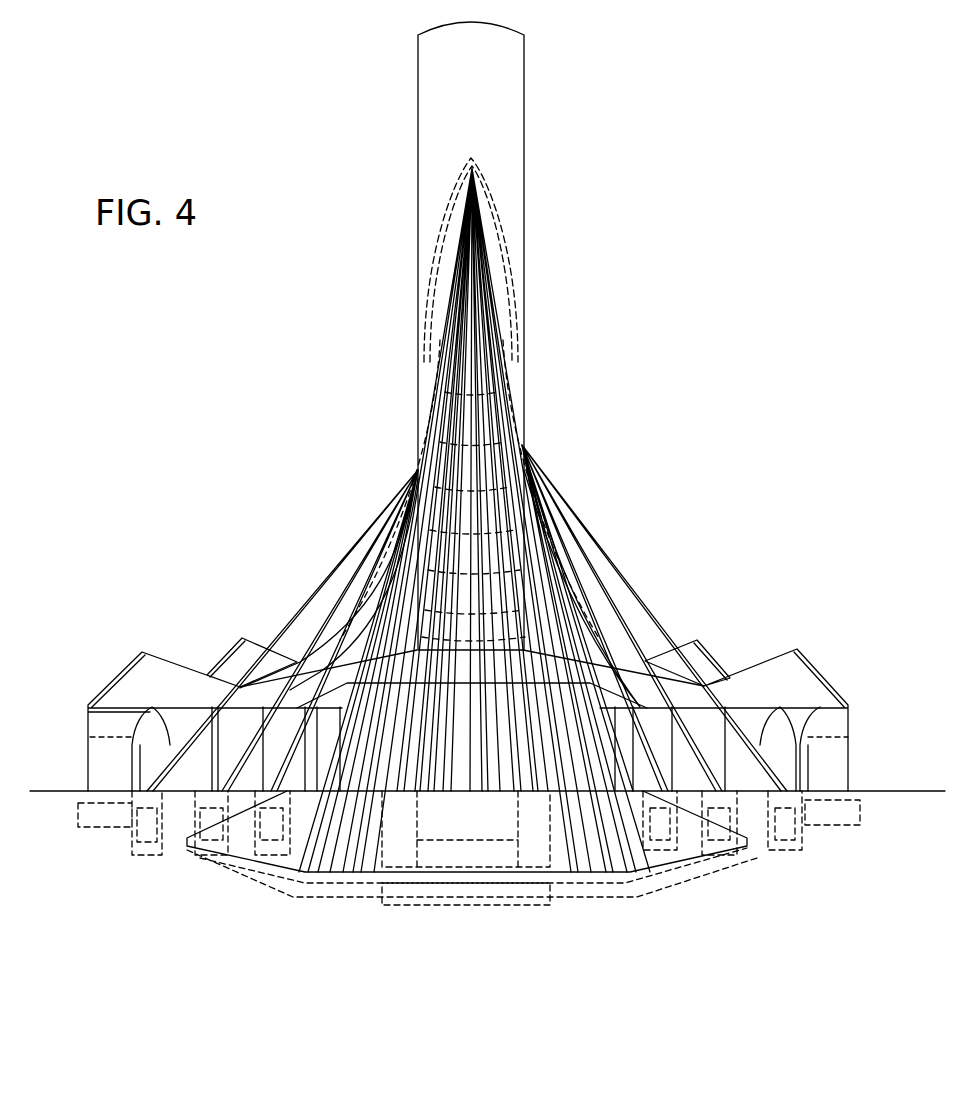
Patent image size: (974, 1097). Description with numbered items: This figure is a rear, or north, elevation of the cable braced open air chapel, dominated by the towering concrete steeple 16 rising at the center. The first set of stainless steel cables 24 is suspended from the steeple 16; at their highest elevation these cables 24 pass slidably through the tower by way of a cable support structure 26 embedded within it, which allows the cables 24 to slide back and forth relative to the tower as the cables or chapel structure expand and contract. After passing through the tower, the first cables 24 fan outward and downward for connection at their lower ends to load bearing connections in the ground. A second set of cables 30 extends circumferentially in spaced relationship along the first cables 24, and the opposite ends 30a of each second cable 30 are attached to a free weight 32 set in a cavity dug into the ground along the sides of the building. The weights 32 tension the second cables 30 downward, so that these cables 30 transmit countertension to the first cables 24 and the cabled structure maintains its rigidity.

The concrete steeple 16 is at (500, 72).
The cable support structure 26 is at (487, 165).
The second set of cables 30 is at (520, 500).
The stainless steel cables 24 is at (480, 597).
The cable ends 30a is at (800, 788).
The free weight 32 is at (792, 827).